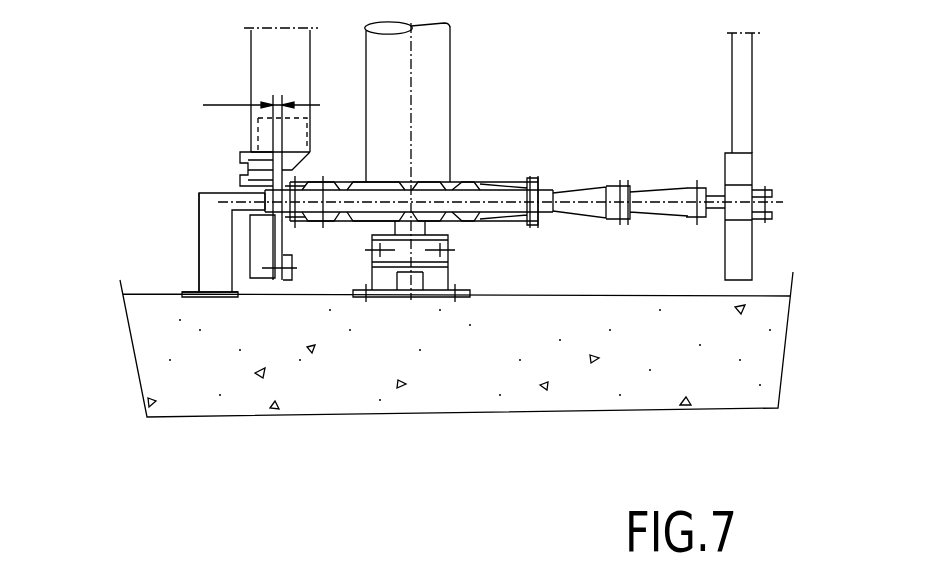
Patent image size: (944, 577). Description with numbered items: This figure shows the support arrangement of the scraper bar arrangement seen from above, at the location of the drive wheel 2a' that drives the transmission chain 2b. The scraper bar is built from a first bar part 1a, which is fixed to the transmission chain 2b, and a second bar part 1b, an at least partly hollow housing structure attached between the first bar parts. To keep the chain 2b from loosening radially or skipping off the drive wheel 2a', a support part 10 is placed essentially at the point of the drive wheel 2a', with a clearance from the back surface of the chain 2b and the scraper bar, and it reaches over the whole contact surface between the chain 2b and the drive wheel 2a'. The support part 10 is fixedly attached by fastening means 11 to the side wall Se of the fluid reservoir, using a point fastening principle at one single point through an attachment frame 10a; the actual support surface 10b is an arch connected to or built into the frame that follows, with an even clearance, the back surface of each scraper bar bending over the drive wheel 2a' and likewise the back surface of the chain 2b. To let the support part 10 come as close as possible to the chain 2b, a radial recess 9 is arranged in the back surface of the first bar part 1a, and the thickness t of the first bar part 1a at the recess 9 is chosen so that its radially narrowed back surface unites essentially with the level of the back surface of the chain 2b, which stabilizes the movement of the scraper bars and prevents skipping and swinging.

The first bar part 1a is at (262, 232).
The second bar part 1b is at (277, 68).
The drive wheel 2a' is at (418, 131).
The transmission chain 2b is at (652, 190).
The radial recess 9 is at (237, 187).
The support part 10 is at (196, 266).
The attachment frame 10a is at (218, 270).
The support surface 10b is at (327, 203).
The fastening means 11 is at (193, 289).
The thickness t is at (222, 105).
The side wall Se is at (756, 297).